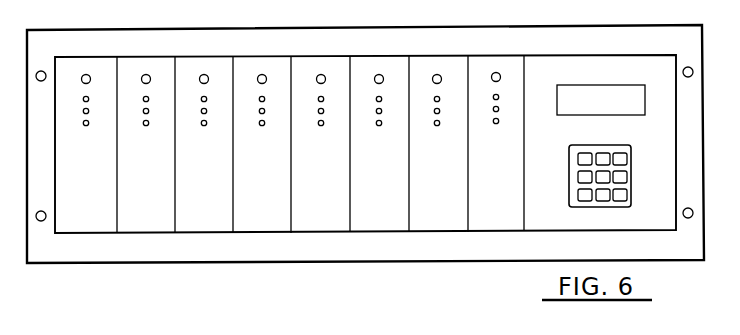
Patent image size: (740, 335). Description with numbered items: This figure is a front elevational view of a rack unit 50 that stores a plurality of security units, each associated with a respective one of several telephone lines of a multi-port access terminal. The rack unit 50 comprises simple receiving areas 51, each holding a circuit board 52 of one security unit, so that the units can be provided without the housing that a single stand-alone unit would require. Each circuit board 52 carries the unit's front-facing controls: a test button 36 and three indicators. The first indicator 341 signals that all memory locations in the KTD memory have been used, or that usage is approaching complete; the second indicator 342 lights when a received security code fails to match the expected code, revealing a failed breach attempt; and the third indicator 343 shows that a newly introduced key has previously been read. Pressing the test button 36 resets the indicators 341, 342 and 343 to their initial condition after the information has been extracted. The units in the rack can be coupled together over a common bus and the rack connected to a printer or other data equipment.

The rack unit 50 is at (397, 27).
The receiving area 51 is at (57, 207).
The circuit board 52 is at (500, 130).
The test button 36 is at (502, 72).
The first indicator 341 is at (499, 97).
The second indicator 342 is at (499, 109).
The third indicator 343 is at (493, 122).